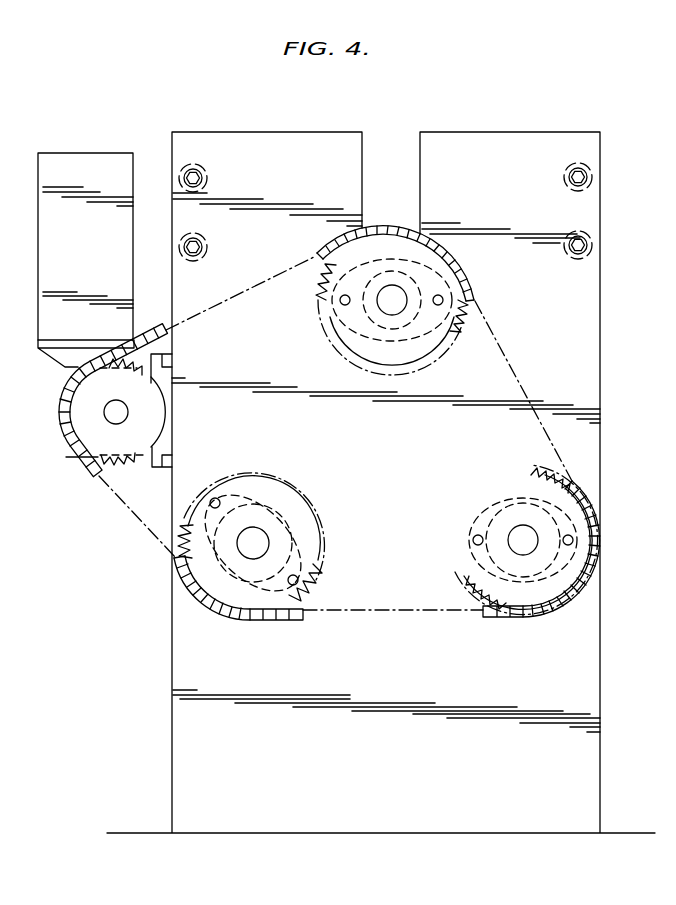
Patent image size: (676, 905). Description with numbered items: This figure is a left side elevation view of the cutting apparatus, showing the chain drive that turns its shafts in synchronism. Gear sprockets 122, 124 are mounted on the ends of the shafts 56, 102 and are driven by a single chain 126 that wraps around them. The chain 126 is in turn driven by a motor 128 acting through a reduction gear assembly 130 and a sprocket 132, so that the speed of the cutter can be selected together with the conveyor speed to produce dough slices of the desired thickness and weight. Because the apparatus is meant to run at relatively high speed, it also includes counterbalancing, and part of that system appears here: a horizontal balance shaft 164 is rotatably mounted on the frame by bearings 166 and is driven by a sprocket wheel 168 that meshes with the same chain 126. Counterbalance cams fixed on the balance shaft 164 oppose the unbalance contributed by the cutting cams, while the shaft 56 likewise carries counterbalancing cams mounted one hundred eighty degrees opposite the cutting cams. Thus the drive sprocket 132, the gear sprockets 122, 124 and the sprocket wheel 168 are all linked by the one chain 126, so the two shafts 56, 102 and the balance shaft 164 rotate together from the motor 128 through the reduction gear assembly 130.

The shaft 56 is at (397, 296).
The shaft 102 is at (513, 542).
The gear sprocket 122 is at (422, 346).
The gear sprocket 124 is at (490, 499).
The chain 126 is at (470, 297).
The motor 128 is at (104, 254).
The reduction gear assembly 130 is at (69, 459).
The sprocket 132 is at (153, 419).
The horizontal balance shaft 164 is at (253, 552).
The bearings 166 is at (296, 539).
The sprocket wheel 168 is at (284, 498).